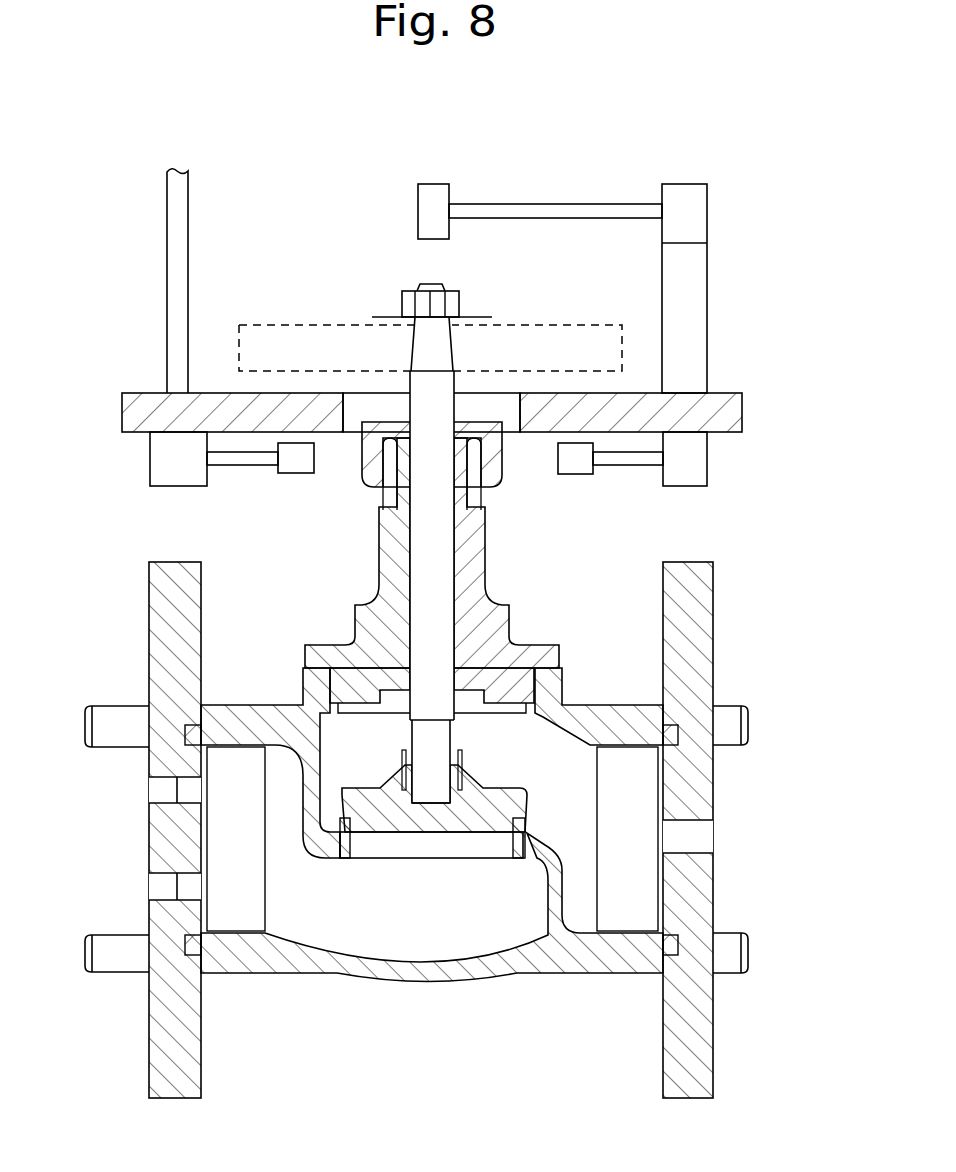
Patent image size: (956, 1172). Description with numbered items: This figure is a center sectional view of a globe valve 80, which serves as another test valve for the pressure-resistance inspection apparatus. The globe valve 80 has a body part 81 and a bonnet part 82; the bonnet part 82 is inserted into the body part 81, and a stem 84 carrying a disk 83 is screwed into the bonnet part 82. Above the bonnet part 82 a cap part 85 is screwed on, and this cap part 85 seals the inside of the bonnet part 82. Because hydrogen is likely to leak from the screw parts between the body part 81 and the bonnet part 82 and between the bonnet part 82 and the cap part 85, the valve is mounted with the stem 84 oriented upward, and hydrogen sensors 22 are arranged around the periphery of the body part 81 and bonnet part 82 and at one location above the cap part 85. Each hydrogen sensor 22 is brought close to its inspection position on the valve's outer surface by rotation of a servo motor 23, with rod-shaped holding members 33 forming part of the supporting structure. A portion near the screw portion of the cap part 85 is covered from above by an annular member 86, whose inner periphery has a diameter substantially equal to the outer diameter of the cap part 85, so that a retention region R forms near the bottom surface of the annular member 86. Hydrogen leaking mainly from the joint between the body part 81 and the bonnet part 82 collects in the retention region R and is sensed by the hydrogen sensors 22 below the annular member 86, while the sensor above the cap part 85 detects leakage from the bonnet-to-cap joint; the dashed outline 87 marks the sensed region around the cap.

The hydrogen sensor 22 is at (438, 193).
The servo motor 23 is at (687, 193).
The rod-shaped holding member 33 is at (178, 193).
The globe valve 80 is at (416, 830).
The body part 81 is at (525, 963).
The bonnet part 82 is at (378, 620).
The disk 83 is at (478, 807).
The stem 84 is at (429, 437).
The cap part 85 is at (391, 418).
The annular member 86 is at (742, 410).
The sensor region (dashed) 87 is at (564, 323).
The retention region R is at (543, 458).